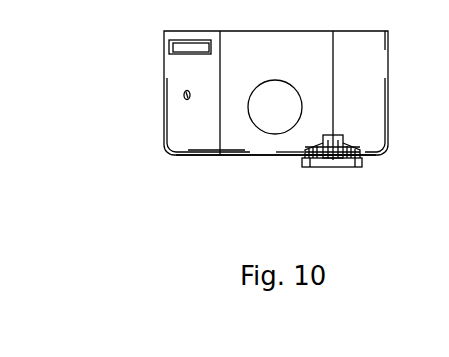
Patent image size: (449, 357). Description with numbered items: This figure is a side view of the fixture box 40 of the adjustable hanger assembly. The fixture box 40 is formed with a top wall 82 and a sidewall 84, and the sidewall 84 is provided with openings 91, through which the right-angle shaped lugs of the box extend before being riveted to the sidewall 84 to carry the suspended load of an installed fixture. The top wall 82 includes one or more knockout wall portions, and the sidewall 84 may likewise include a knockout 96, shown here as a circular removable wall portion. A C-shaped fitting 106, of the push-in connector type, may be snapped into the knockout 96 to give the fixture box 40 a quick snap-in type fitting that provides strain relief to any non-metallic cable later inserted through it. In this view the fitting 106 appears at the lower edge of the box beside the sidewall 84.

The fixture box 40 is at (124, 56).
The top wall 82 is at (278, 153).
The sidewall 84 is at (368, 81).
The openings 91 is at (190, 48).
The knockout 96 is at (250, 128).
The C-shaped fitting 106 is at (334, 160).